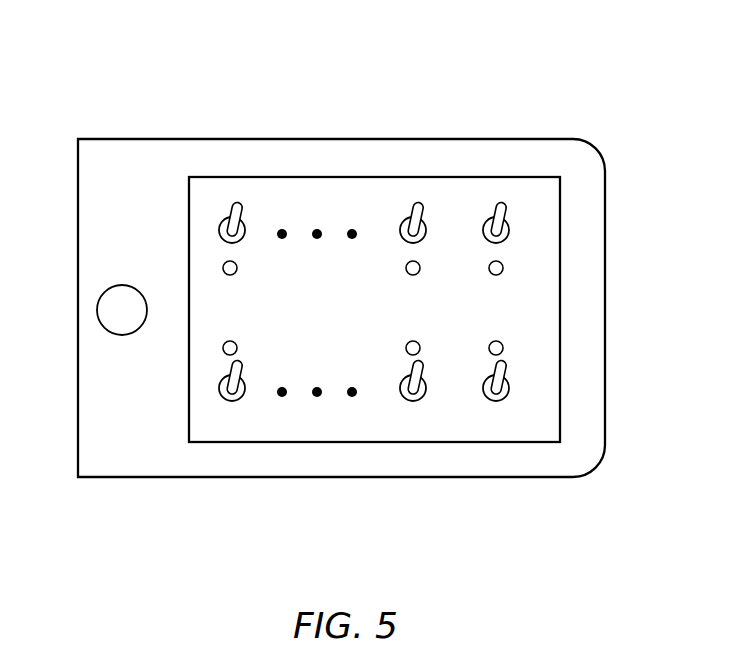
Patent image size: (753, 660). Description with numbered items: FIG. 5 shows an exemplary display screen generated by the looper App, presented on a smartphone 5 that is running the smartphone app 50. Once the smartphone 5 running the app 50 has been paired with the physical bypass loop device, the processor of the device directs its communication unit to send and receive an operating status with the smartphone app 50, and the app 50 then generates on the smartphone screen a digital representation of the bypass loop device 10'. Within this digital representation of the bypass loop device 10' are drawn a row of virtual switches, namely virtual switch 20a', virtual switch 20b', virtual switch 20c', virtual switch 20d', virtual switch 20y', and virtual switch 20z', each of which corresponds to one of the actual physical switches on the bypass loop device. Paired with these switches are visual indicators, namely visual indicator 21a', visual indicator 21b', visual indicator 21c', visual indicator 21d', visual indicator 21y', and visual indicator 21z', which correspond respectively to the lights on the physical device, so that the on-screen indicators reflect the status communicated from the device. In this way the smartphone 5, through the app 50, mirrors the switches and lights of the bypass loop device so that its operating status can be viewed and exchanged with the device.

The smartphone app 50 is at (128, 82).
The smartphone 5 is at (117, 222).
The digital representation of the bypass loop device 10' is at (418, 270).
The virtual switch 20y' is at (228, 169).
The virtual switch 20c' is at (377, 169).
The virtual switch 20a' is at (521, 167).
The virtual switch 20z' is at (176, 393).
The virtual switch 20d' is at (427, 441).
The virtual switch 20b' is at (582, 396).
The visual indicator 21y' is at (284, 267).
The visual indicator 21c' is at (439, 183).
The visual indicator 21a' is at (579, 242).
The visual indicator 21z' is at (165, 362).
The visual indicator 21d' is at (357, 335).
The visual indicator 21b' is at (585, 344).